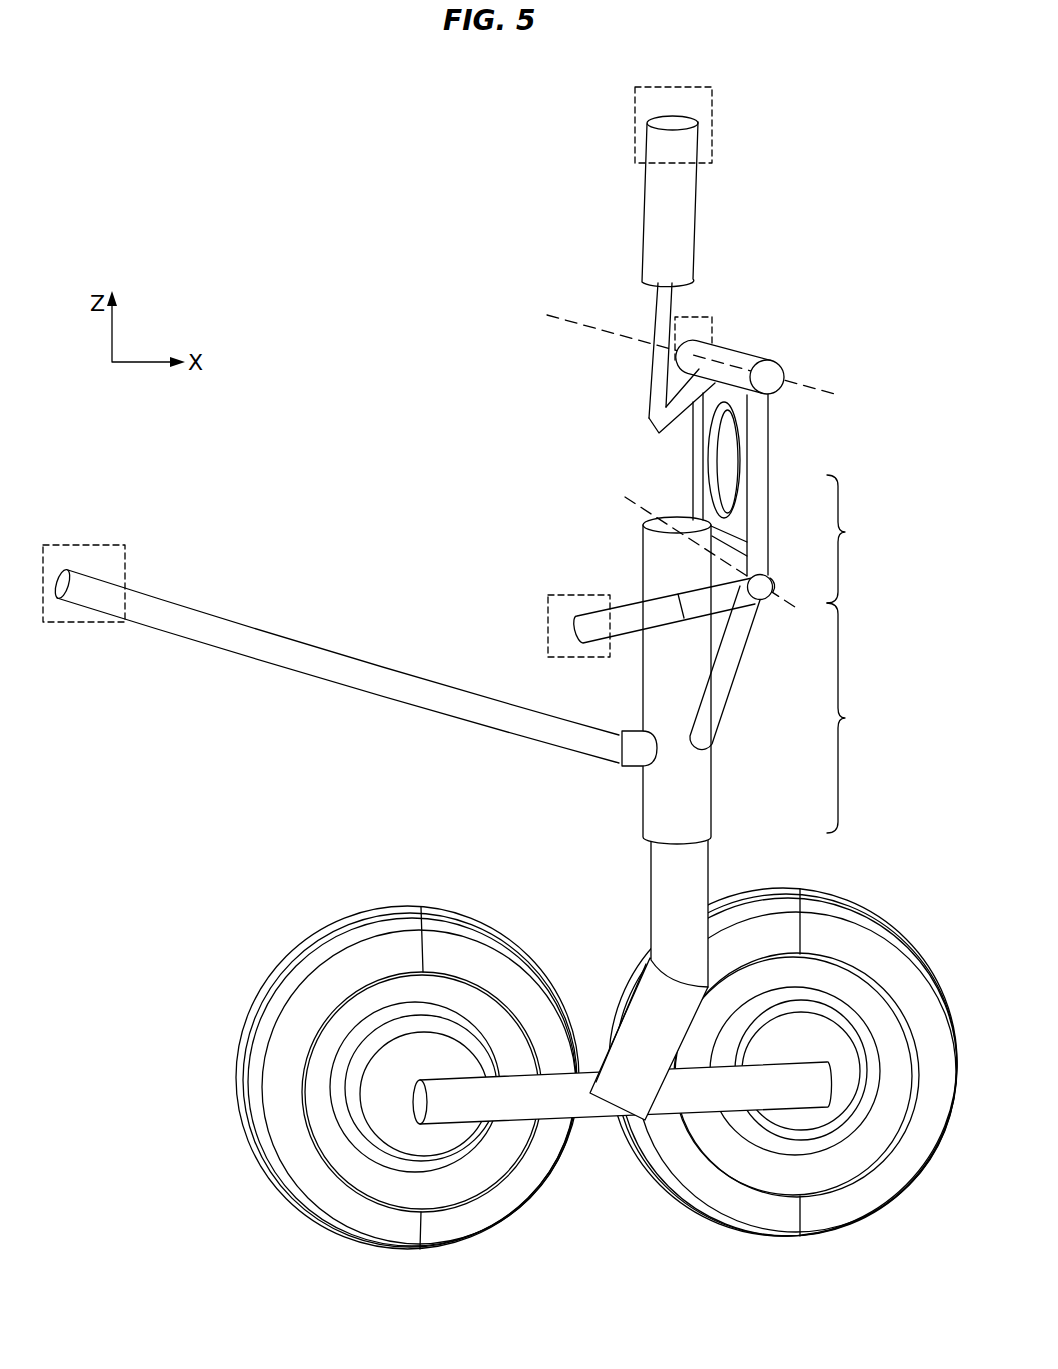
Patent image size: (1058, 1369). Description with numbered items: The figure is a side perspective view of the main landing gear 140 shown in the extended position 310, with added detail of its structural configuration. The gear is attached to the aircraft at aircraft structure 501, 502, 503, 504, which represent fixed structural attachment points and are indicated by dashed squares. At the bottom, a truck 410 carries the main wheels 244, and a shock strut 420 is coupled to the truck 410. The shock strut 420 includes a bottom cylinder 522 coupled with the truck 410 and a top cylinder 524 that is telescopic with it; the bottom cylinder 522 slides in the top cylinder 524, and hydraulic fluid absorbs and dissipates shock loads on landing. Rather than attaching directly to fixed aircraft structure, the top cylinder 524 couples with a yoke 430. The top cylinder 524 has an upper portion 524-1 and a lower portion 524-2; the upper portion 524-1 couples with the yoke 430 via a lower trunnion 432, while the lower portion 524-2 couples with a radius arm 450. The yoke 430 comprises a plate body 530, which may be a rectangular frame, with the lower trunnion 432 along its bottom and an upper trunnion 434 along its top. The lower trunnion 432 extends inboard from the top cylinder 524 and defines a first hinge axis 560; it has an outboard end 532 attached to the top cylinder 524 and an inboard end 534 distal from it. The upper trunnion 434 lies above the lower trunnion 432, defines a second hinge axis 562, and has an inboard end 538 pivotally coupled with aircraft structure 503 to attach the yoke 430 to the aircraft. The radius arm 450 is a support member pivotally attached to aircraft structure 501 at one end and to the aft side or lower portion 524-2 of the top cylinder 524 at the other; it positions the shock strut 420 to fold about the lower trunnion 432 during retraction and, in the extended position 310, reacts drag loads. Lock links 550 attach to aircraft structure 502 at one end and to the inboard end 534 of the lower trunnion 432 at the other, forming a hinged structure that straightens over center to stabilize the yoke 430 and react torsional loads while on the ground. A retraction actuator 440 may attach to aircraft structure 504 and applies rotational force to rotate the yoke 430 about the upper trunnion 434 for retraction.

The main landing gear 140 is at (355, 296).
The main wheels 244 is at (350, 1217).
The extended position 310 is at (420, 527).
The truck 410 is at (615, 1048).
The shock strut 420 is at (604, 872).
The yoke 430 is at (740, 428).
The lower trunnion 432 is at (703, 570).
The upper trunnion 434 is at (728, 350).
The retraction actuator 440 is at (709, 204).
The radius arm 450 is at (202, 638).
The aircraft structure 501 is at (65, 623).
The aircraft structure 502 is at (570, 660).
The aircraft structure 503 is at (702, 315).
The aircraft structure 504 is at (712, 96).
The bottom cylinder 522 is at (667, 920).
The top cylinder 524 is at (653, 788).
The upper portion 524-1 is at (875, 539).
The lower portion 524-2 is at (875, 718).
The plate body 530 is at (781, 406).
The outboard end 532 is at (684, 500).
The inboard end 534 is at (790, 579).
The inboard end 538 is at (791, 355).
The lock links 550 is at (626, 636).
The first hinge axis 560 is at (640, 510).
The second hinge axis 562 is at (583, 324).